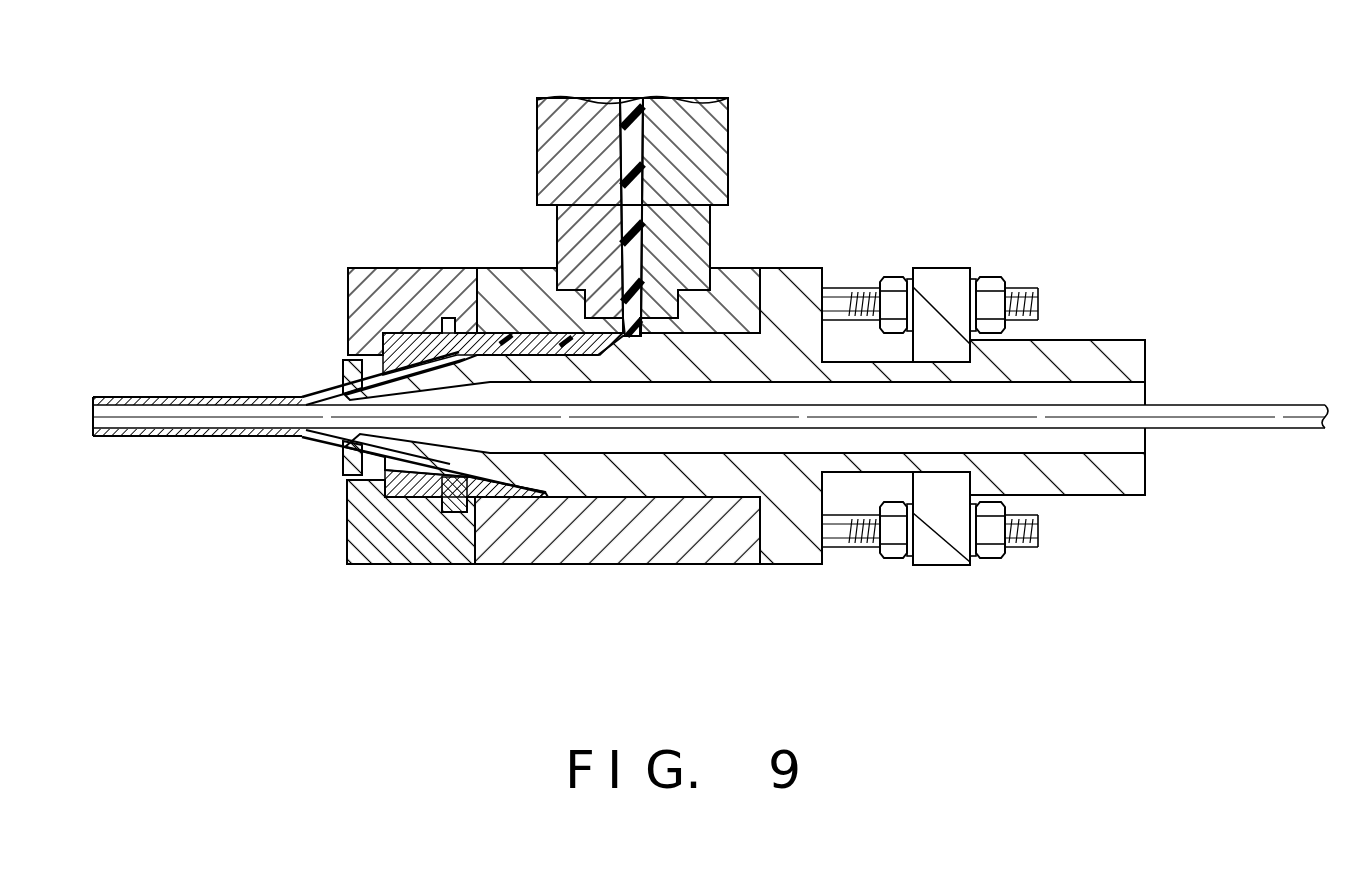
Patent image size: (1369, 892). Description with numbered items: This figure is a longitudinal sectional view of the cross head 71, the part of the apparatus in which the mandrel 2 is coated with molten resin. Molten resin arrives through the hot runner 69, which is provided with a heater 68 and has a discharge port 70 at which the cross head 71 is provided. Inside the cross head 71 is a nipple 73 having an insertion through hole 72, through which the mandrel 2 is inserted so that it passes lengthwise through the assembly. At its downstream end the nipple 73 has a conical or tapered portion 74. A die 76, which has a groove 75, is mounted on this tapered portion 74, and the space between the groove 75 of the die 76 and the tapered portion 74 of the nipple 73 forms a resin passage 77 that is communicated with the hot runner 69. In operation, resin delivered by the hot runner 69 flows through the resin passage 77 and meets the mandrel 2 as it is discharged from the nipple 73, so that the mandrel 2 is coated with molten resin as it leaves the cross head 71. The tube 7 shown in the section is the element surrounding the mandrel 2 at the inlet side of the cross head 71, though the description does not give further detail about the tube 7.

The mandrel 2 is at (1210, 430).
The tube 7 is at (164, 397).
The heater 68 is at (731, 150).
The hot runner 69 is at (712, 238).
The discharge port 70 is at (627, 307).
The cross head 71 is at (640, 565).
The insertion through hole 72 is at (568, 443).
The nipple 73 is at (703, 488).
The conical or tapered portion 74 is at (380, 462).
The groove 75 is at (404, 362).
The die 76 is at (342, 372).
The resin passage 77 is at (447, 473).